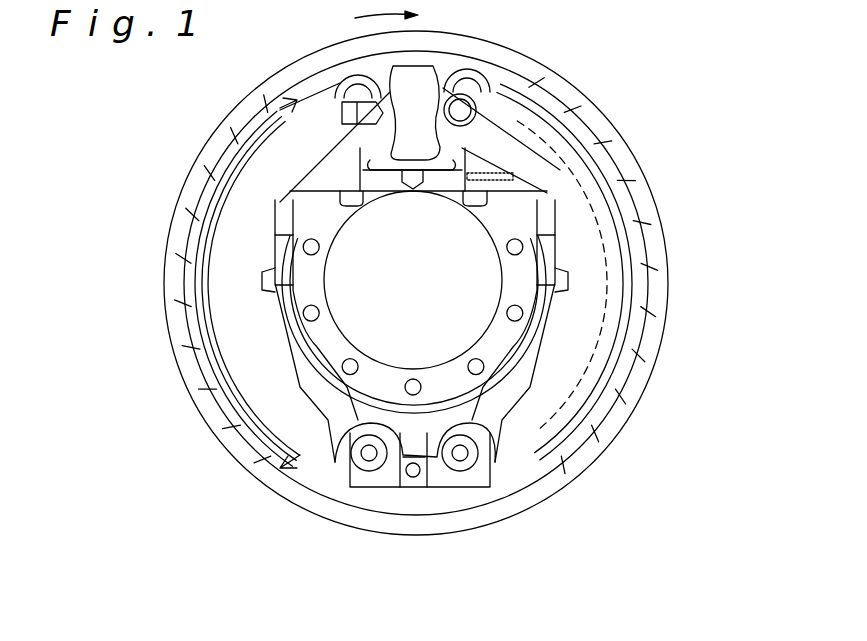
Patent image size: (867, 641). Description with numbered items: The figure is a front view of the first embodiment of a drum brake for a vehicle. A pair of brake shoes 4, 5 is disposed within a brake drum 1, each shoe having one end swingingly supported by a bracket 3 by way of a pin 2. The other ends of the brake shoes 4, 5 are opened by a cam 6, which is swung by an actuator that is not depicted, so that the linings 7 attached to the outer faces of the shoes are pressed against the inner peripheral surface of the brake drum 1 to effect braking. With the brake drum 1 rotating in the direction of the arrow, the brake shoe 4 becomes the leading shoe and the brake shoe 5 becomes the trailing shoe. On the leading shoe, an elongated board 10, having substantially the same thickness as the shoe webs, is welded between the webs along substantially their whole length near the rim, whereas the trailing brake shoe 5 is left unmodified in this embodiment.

The brake drum 1 is at (543, 76).
The pin 2 is at (460, 456).
The bracket 3 is at (487, 438).
The brake shoe 4 is at (588, 310).
The brake shoe 5 is at (176, 335).
The cam 6 is at (420, 90).
The linings 7 is at (598, 156).
The elongated board 10 is at (565, 410).